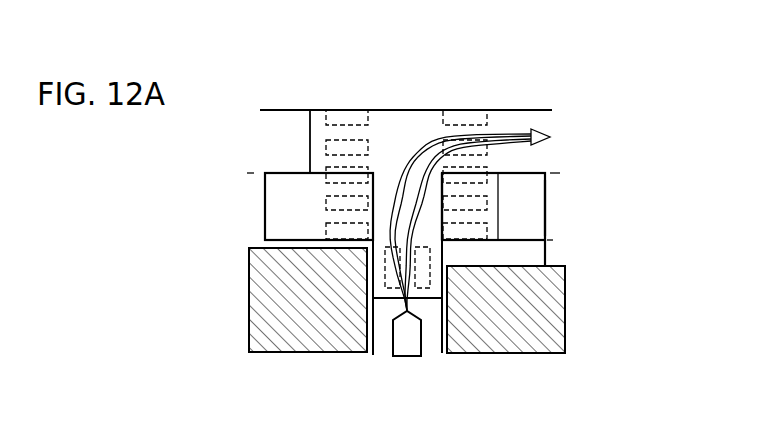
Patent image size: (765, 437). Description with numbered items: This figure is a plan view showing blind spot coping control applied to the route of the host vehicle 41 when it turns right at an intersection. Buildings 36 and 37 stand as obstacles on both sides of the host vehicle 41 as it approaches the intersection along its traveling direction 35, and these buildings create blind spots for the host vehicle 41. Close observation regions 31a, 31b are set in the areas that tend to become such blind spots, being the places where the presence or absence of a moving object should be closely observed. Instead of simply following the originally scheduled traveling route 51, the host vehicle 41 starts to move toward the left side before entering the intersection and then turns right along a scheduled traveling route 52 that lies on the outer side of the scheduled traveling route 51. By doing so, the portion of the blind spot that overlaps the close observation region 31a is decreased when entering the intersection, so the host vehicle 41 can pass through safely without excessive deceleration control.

The close observation region 31a is at (546, 190).
The close observation region 31b is at (266, 207).
The traveling direction 35 is at (547, 206).
The building 36 is at (565, 310).
The building 37 is at (249, 309).
The host vehicle 41 is at (404, 345).
The scheduled traveling route 51 is at (410, 178).
The scheduled traveling route 52 is at (398, 196).